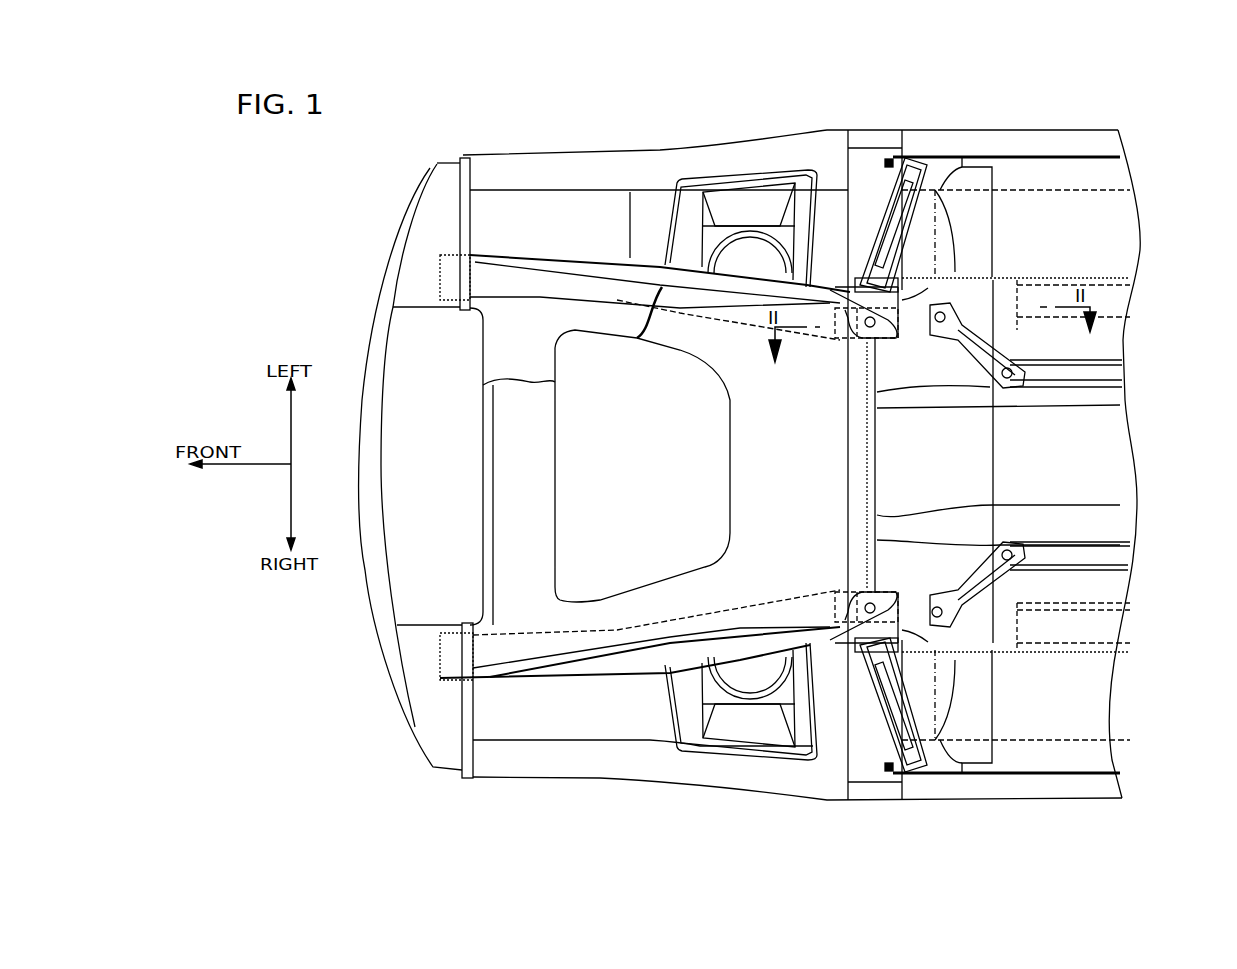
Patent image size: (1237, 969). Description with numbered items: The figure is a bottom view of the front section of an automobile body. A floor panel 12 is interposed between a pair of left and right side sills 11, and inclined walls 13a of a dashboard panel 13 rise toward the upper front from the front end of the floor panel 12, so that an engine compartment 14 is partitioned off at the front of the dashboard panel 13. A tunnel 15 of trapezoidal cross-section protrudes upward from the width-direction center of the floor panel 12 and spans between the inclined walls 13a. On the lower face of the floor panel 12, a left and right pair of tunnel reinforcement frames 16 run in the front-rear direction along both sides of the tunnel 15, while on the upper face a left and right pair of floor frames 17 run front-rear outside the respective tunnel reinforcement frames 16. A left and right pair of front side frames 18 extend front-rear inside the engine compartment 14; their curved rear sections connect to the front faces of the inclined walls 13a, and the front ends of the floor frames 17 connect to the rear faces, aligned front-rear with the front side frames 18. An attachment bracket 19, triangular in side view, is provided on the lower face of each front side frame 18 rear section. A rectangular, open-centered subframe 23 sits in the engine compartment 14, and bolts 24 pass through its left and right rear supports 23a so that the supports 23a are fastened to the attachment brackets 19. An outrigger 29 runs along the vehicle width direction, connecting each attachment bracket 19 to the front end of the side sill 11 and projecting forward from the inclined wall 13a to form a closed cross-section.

The side sill 11 is at (1060, 142).
The floor panel 12 is at (1072, 254).
The dashboard panel 13 is at (870, 433).
The inclined wall 13a is at (943, 232).
The engine compartment 14 is at (651, 444).
The tunnel 15 is at (1128, 550).
The tunnel reinforcement frame 16 is at (1077, 375).
The floor frame 17 is at (1115, 290).
The front side frame 18 is at (843, 285).
The attachment bracket 19 is at (913, 300).
The subframe 23 is at (613, 665).
The support 23a is at (883, 325).
The bolt 24 is at (867, 328).
The outrigger 29 is at (872, 192).